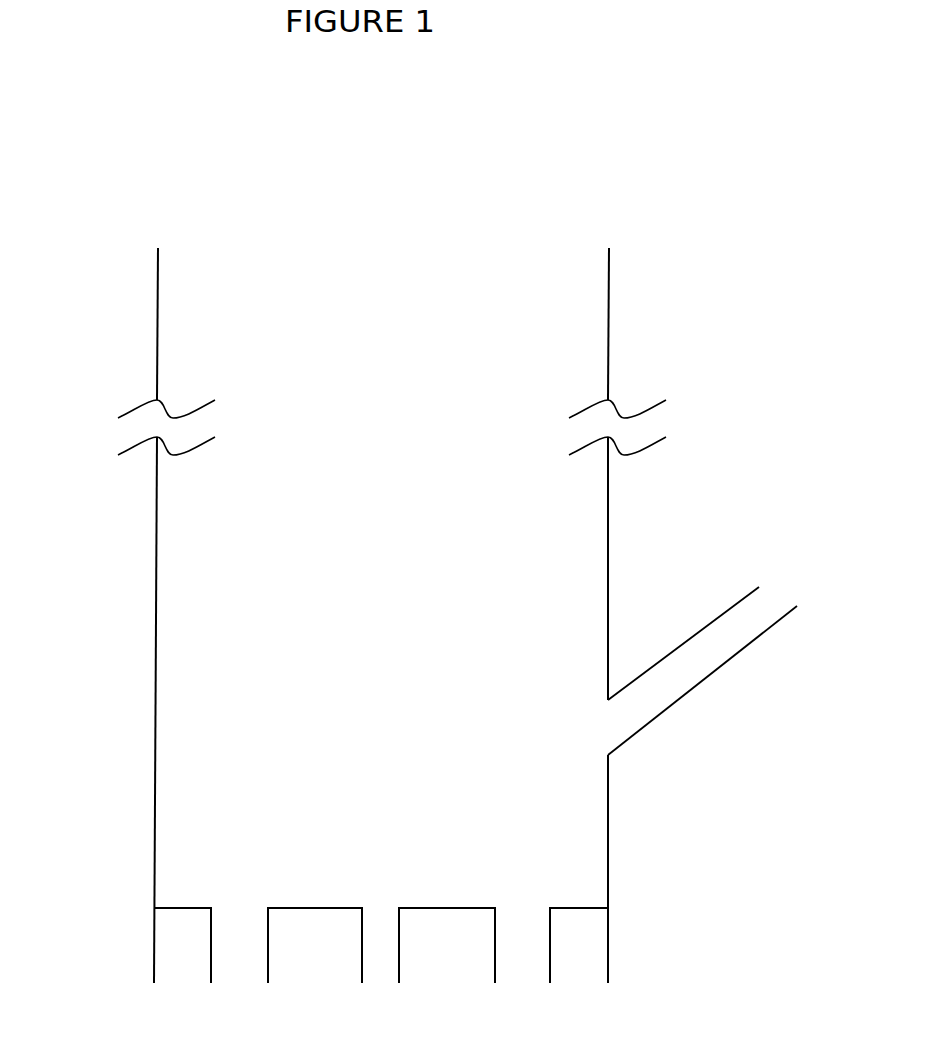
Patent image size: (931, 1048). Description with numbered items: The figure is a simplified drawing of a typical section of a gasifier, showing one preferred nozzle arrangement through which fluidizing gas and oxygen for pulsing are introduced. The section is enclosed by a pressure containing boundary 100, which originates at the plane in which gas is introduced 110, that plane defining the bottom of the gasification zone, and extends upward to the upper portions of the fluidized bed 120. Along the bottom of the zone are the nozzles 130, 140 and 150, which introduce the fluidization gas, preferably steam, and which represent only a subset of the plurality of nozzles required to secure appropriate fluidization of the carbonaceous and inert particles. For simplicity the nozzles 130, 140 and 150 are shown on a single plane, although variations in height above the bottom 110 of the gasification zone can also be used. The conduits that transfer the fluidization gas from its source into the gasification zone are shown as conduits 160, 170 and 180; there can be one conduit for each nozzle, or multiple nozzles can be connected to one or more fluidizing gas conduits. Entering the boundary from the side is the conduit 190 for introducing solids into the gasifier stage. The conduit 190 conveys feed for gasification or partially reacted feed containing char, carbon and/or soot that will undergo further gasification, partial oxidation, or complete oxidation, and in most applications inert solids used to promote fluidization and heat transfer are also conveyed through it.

The pressure containing boundary 100 is at (140, 643).
The plane in which gas is introduced 110 is at (587, 898).
The upper portions of the fluidized bed 120 is at (137, 339).
The nozzle 130 is at (239, 922).
The nozzle 140 is at (373, 917).
The nozzle 150 is at (517, 926).
The fluidization gas conduit 160 is at (207, 948).
The fluidization gas conduit 170 is at (356, 943).
The fluidization gas conduit 180 is at (486, 935).
The solids conduit 190 is at (677, 716).